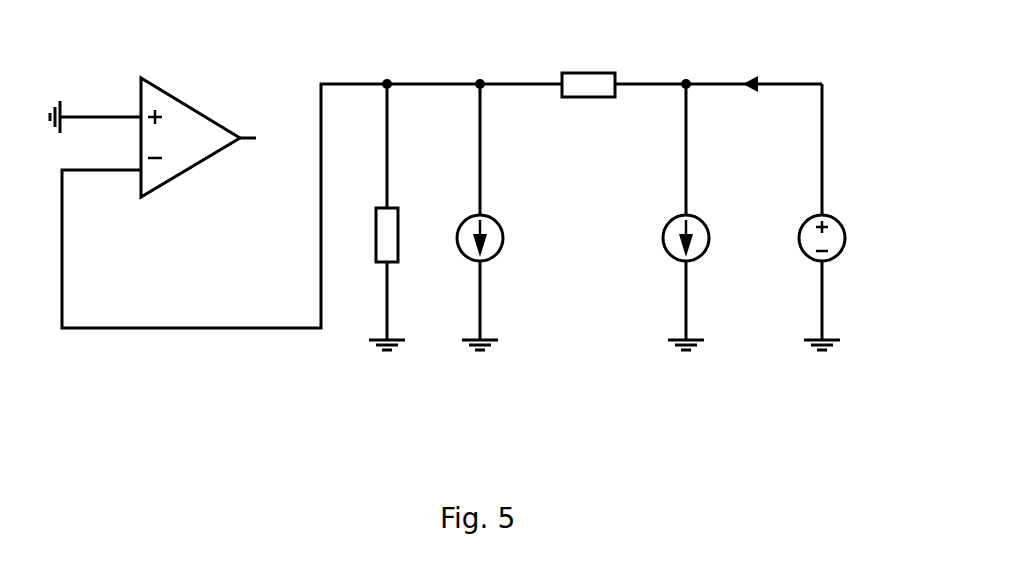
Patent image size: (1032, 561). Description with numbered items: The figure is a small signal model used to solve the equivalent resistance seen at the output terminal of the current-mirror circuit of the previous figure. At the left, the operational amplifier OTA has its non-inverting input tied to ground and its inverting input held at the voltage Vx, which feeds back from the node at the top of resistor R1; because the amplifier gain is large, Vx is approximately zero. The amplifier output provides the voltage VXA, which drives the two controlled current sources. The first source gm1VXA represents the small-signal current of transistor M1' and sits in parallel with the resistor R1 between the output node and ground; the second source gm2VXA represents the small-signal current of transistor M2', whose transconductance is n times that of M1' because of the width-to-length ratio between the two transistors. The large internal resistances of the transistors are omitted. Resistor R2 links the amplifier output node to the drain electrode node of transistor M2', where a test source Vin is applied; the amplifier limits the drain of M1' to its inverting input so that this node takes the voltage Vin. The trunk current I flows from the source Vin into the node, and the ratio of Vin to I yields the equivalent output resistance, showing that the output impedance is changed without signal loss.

The operational amplifier OTA is at (153, 137).
The output terminal voltage VXA is at (272, 138).
The inverting input terminal voltage Vx is at (293, 206).
The resistor R1' R1 is at (401, 217).
The resistor R2' R2 is at (624, 71).
The small-signal current of transistor M1' gm1VXA is at (515, 217).
The small-signal current of transistor M2' gm2VXA is at (720, 217).
The trunk current I is at (754, 74).
The voltage of drain electrode TX' Vin is at (844, 217).